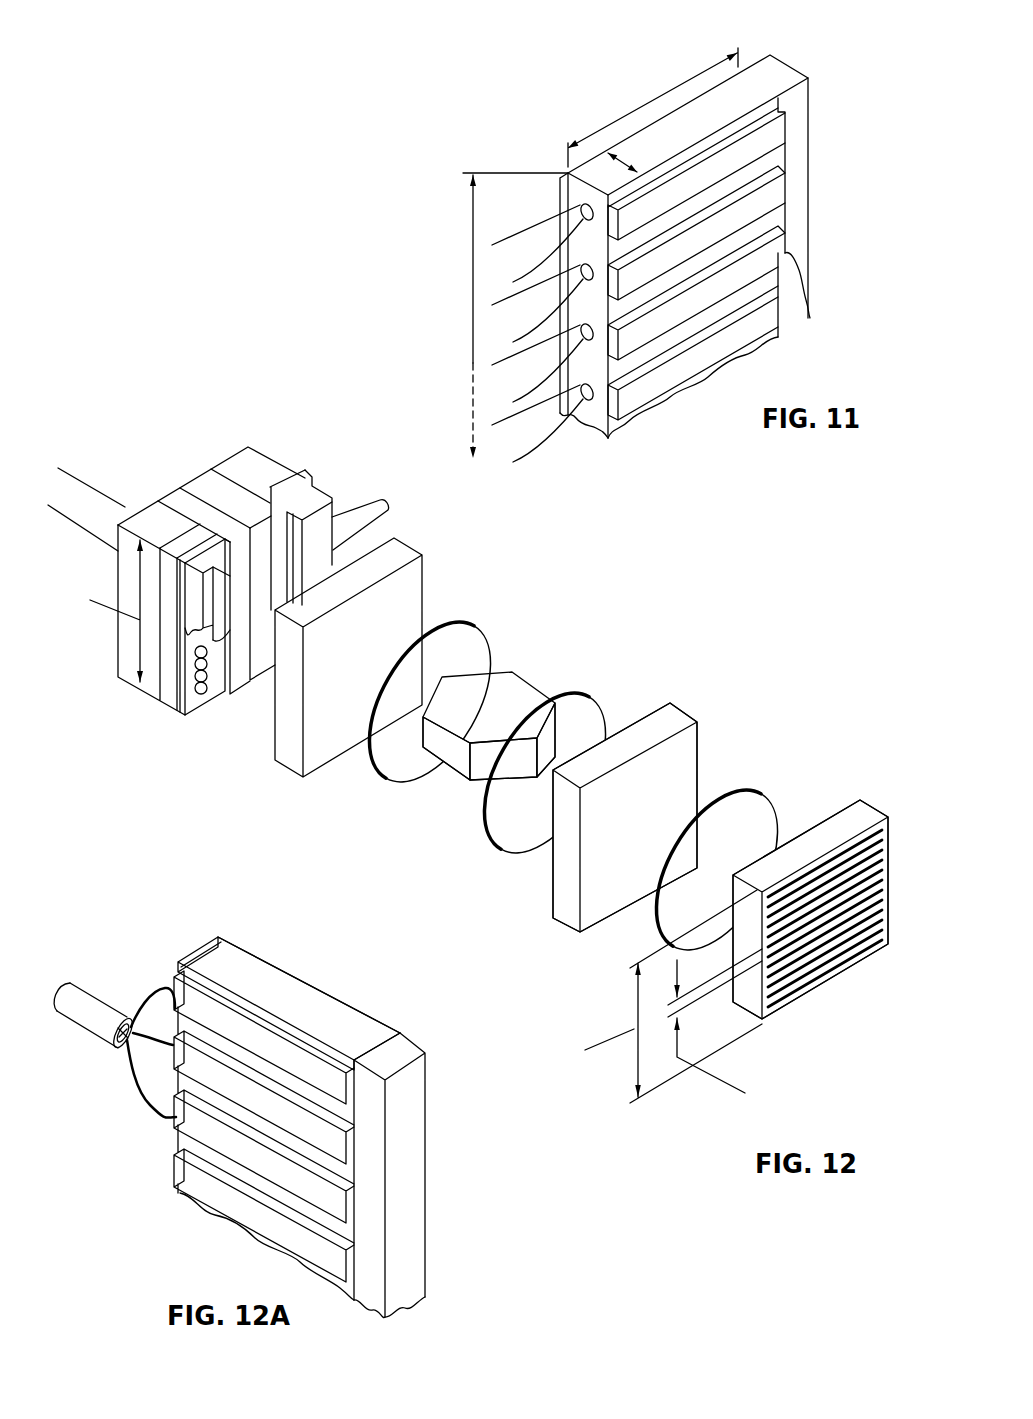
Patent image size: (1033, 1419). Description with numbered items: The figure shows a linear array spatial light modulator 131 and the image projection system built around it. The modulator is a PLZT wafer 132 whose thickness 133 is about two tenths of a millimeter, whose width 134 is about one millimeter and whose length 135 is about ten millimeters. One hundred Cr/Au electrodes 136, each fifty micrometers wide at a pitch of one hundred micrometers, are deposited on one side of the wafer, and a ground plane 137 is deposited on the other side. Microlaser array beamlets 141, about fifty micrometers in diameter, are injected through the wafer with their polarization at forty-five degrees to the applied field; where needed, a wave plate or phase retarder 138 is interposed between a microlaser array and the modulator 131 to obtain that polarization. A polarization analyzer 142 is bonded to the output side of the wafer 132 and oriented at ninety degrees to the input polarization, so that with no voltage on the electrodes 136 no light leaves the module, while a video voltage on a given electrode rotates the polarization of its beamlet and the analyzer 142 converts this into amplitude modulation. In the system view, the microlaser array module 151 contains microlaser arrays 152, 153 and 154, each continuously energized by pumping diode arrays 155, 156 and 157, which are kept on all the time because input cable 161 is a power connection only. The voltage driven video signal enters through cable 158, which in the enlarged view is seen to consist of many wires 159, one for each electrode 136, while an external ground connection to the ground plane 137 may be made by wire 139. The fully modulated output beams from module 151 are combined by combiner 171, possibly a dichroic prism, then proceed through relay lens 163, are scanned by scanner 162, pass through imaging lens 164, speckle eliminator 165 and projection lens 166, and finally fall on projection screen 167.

In FIG. 11, the modulator 131 is at (560, 107).
In FIG. 12, the modulator 131 is at (247, 718).
In FIG. 12A, the modulator 131 is at (170, 1219).
In FIG. 11, the wafer 132 is at (750, 92).
In FIG. 12A, the wafer 132 is at (243, 963).
In FIG. 11, the thickness 133 is at (608, 152).
In FIG. 11, the width 134 is at (697, 78).
In FIG. 11, the length 135 is at (472, 327).
In FIG. 11, the electrodes 136 is at (786, 180).
In FIG. 12A, the electrodes 136 is at (198, 1190).
In FIG. 11, the ground plane 137 is at (560, 192).
In FIG. 12A, the ground plane 137 is at (340, 997).
In FIG. 12A, the wave plate or phase retarder 138 is at (205, 944).
In FIG. 12A, the wire 139 is at (275, 957).
In FIG. 11, the microlaser array beamlets 141 is at (513, 297).
In FIG. 11, the polarization analyzer 142 is at (808, 112).
In FIG. 12A, the polarization analyzer 142 is at (422, 1283).
In FIG. 12, the microlaser array module 151 is at (123, 707).
In FIG. 12, the microlaser array 152 is at (192, 705).
In FIG. 12, the microlaser array 153 is at (243, 507).
In FIG. 12, the microlaser array 154 is at (308, 481).
In FIG. 12, the pumping diode array 155 is at (158, 513).
In FIG. 12, the pumping diode array 156 is at (202, 490).
In FIG. 12, the pumping diode array 157 is at (243, 462).
In FIG. 12, the cable 158 is at (388, 503).
In FIG. 12A, the cable 158 is at (70, 1015).
In FIG. 12A, the wires 159 is at (157, 988).
In FIG. 12, the input cable 161 is at (92, 483).
In FIG. 12, the scanner 162 is at (530, 685).
In FIG. 12, the relay lens 163 is at (472, 623).
In FIG. 12, the imaging lens 164 is at (614, 730).
In FIG. 12, the speckle eliminator 165 is at (697, 735).
In FIG. 12, the projection lens 166 is at (758, 790).
In FIG. 12, the projection screen 167 is at (847, 962).
In FIG. 12, the combiner 171 is at (335, 752).